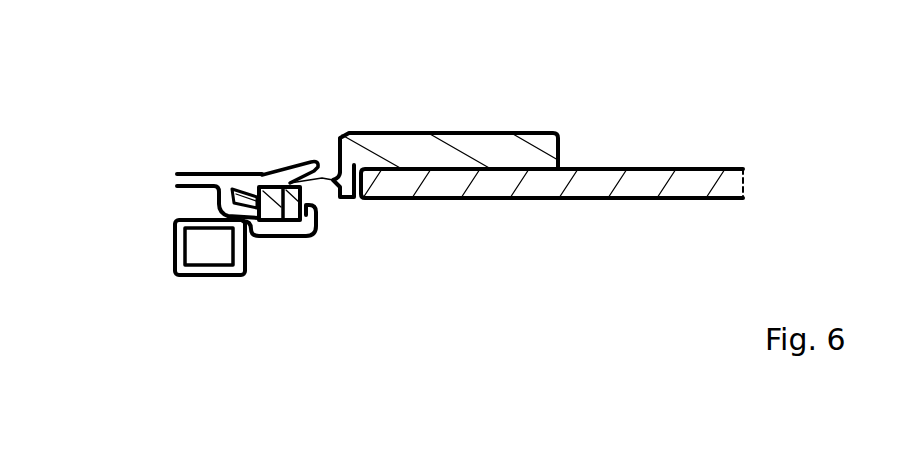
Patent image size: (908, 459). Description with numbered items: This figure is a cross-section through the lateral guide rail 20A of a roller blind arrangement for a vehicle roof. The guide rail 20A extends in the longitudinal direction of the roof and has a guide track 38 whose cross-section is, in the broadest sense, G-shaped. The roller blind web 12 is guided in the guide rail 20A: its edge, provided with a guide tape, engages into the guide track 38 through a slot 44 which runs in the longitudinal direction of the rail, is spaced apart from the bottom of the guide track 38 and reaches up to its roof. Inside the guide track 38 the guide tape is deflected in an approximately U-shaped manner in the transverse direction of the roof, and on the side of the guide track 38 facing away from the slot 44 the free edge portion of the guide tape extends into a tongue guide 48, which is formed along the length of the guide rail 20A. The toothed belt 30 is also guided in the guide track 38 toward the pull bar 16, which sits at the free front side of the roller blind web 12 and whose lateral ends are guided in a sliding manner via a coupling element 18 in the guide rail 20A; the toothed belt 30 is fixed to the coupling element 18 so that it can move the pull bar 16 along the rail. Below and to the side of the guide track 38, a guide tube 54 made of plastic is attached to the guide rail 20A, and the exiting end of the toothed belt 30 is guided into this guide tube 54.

The roller blind web 12 is at (488, 198).
The pull bar 16 is at (604, 170).
The coupling element 18 is at (413, 145).
The guide rail 20A is at (178, 173).
The toothed belt 30 is at (269, 188).
The guide track 38 is at (298, 220).
The slot 44 is at (318, 163).
The tongue guide 48 is at (243, 189).
The guide tube 54 is at (208, 263).